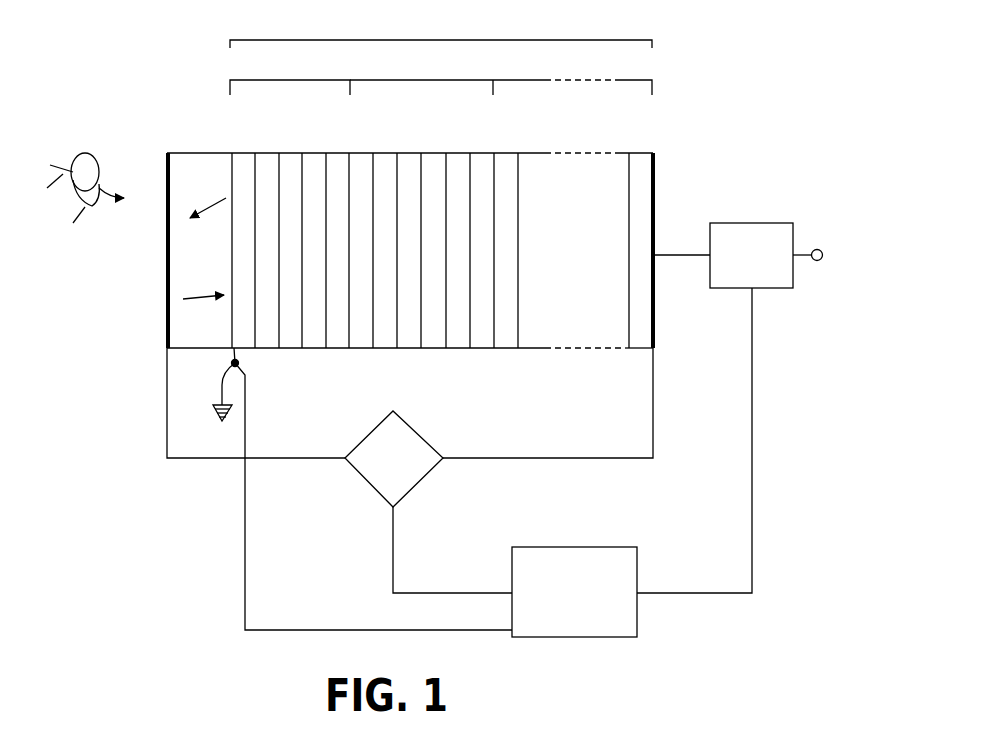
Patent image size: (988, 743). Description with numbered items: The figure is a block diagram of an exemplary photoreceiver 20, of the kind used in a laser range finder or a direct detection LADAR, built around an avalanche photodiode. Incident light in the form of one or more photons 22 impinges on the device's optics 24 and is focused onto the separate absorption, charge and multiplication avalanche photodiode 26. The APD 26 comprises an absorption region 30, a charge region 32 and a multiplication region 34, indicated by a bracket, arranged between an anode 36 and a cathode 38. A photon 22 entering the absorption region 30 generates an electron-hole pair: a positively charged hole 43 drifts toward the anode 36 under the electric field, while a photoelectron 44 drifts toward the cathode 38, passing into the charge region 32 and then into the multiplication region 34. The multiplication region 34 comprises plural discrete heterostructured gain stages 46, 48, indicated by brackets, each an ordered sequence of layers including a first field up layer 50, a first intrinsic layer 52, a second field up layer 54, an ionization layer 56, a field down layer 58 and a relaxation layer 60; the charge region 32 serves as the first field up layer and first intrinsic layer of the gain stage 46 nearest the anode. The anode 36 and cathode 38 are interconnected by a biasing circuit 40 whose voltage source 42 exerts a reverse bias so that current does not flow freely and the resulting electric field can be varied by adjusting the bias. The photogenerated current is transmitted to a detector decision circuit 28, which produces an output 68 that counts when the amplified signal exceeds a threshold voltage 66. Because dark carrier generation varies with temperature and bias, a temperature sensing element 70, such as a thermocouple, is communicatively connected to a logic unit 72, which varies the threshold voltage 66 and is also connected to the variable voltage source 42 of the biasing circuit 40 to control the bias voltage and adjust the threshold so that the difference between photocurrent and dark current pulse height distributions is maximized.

The photoreceiver 20 is at (716, 104).
The photon 22 is at (63, 188).
The optics 24 is at (88, 222).
The avalanche photodiode 26 is at (143, 337).
The detector decision circuit 28 is at (765, 223).
The absorption region 30 is at (184, 152).
The charge region 32 is at (240, 152).
The multiplication region 34 is at (596, 39).
The anode 36 is at (166, 236).
The cathode 38 is at (656, 298).
The biasing circuit 40 is at (217, 547).
The voltage source 42 is at (414, 428).
The hole 43 is at (212, 222).
The photoelectron 44 is at (200, 304).
The gain stage 46 is at (262, 80).
The gain stage 48 is at (410, 80).
The first field up layer 50 is at (363, 152).
The first intrinsic layer 52 is at (387, 152).
The second field up layer 54 is at (263, 152).
The ionization layer 56 is at (290, 152).
The field down layer 58 is at (313, 152).
The relaxation layer 60 is at (337, 152).
The threshold voltage 66 is at (757, 360).
The output 68 is at (823, 250).
The temperature sensing element 70 is at (247, 367).
The logic unit 72 is at (578, 546).